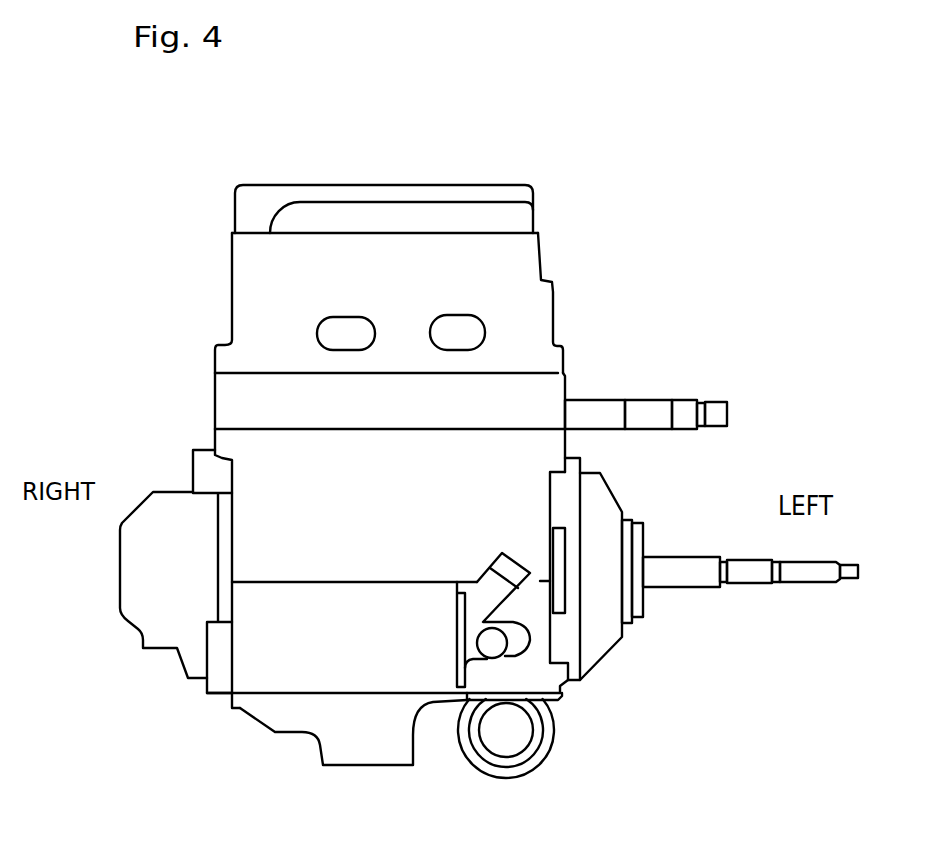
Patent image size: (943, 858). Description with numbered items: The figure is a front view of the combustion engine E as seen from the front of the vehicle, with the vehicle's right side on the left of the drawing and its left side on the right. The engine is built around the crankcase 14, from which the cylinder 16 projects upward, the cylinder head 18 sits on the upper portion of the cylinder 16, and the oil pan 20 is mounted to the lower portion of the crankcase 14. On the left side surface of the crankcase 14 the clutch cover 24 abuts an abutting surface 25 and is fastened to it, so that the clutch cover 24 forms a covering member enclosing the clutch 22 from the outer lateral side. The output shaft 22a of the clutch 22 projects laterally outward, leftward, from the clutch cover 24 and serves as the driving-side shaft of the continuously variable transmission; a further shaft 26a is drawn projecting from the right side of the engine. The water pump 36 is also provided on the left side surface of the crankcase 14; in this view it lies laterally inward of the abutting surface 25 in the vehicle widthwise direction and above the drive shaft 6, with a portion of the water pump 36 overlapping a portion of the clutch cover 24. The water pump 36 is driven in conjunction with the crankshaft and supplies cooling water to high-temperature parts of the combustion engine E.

The cylinder head 18 is at (250, 270).
The cylinder 16 is at (236, 392).
The crankcase 14 is at (258, 497).
The clutch cover 24 is at (590, 657).
The abutting surface 25 is at (550, 640).
The clutch 22 is at (600, 520).
The output shaft 22a is at (752, 586).
The drive shaft 26a is at (686, 405).
The oil pan 20 is at (340, 745).
The water pump 36 is at (485, 663).
The drive shaft 6 is at (508, 738).
The combustion engine E is at (244, 728).